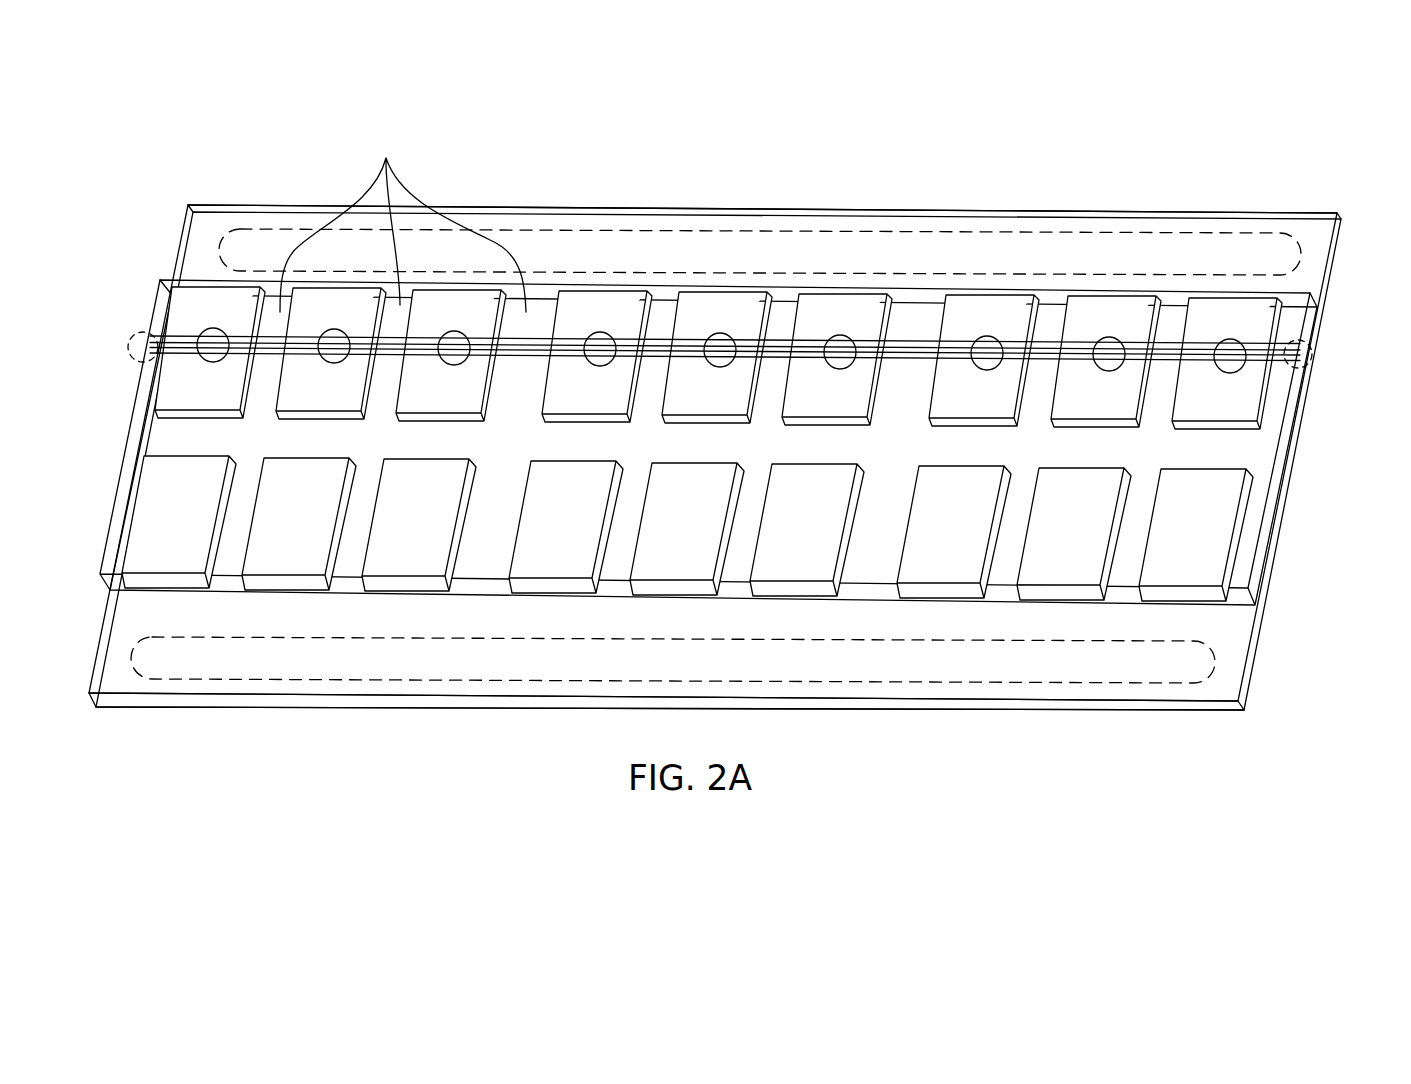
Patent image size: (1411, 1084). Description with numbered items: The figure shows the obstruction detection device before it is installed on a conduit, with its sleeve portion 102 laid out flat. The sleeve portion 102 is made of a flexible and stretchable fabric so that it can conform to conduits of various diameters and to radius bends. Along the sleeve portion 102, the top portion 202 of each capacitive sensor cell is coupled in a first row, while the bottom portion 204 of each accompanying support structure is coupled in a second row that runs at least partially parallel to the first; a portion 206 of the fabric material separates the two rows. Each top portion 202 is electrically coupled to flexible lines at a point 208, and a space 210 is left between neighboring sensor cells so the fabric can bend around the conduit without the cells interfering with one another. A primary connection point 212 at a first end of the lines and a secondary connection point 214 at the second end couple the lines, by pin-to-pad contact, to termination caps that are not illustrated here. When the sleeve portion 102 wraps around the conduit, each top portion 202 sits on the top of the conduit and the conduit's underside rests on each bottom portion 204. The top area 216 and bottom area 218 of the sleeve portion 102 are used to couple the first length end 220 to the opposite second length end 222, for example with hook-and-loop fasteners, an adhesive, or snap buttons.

The sleeve portion 102 is at (232, 114).
The top portion 202 is at (189, 395).
The bottom portion 204 is at (153, 530).
The portion 206 is at (1252, 452).
The point 208 is at (838, 335).
The space 210 is at (403, 222).
The primary connection point 212 is at (1314, 354).
The secondary connection point 214 is at (148, 340).
The top area 216 is at (1170, 683).
The bottom area 218 is at (1246, 232).
The first length end 220 is at (869, 703).
The second length end 222 is at (925, 205).